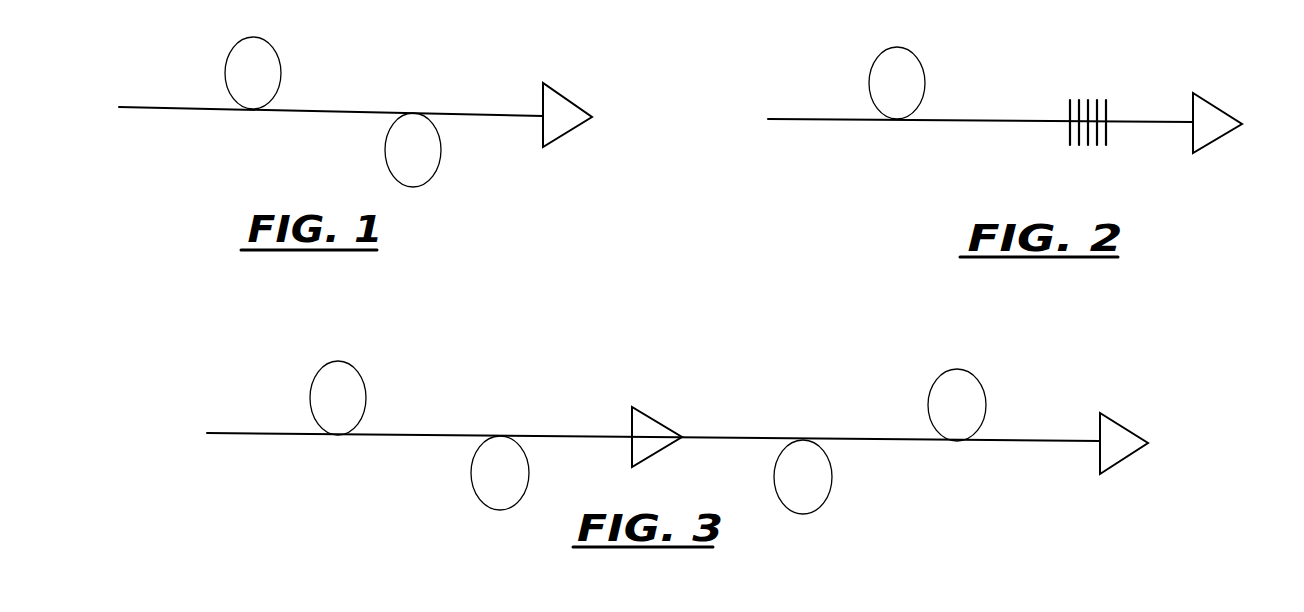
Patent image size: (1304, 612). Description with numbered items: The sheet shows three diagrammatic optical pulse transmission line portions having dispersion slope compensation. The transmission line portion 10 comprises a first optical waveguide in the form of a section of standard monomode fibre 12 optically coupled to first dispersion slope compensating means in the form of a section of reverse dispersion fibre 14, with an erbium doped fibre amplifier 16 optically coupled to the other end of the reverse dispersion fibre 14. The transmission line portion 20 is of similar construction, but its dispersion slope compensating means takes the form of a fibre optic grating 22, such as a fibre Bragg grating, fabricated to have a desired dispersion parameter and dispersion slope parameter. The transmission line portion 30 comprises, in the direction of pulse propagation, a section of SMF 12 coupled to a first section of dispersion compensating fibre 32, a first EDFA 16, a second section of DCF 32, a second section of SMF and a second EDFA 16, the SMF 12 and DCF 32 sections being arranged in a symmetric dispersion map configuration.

In FIG. 1, the optical pulse transmission line portion 10 is at (445, 85).
In FIG. 1, the standard monomode fibre 12 is at (237, 67).
In FIG. 2, the standard monomode fibre 12 is at (882, 78).
In FIG. 3, the standard monomode fibre 12 is at (328, 383).
In FIG. 1, the reverse dispersion fibre 14 is at (425, 157).
In FIG. 1, the erbium doped fibre amplifier 16 is at (567, 117).
In FIG. 2, the erbium doped fibre amplifier 16 is at (1207, 117).
In FIG. 3, the erbium doped fibre amplifier 16 is at (645, 422).
In FIG. 2, the optical pulse transmission line portion 20 is at (960, 164).
In FIG. 2, the fibre optic grating 22 is at (1070, 100).
In FIG. 3, the optical pulse transmission line portion 30 is at (770, 380).
In FIG. 3, the dispersion compensating fibre 32 is at (487, 483).